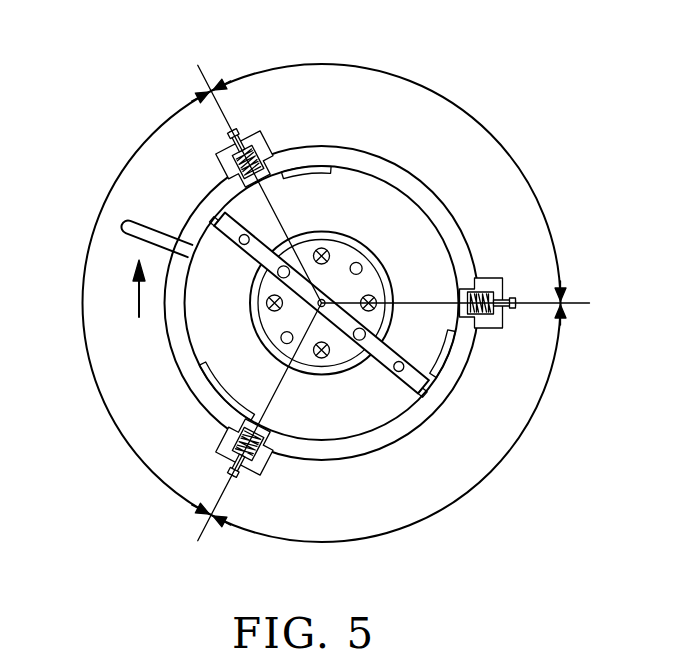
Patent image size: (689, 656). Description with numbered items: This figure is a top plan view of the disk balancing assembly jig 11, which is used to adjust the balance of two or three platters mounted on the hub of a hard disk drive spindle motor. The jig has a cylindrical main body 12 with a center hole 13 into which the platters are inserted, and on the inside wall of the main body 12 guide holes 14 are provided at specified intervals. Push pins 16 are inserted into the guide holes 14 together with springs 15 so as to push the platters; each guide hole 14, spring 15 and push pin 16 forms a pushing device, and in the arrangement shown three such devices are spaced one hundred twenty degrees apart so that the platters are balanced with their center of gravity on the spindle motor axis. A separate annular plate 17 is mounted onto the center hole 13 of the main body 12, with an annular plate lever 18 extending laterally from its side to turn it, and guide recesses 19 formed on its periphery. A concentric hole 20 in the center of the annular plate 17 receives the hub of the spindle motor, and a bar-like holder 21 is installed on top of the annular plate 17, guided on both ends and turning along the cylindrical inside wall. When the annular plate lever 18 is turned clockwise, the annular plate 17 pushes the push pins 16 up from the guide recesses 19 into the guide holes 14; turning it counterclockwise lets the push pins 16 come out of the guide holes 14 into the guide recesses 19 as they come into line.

The disk balancing assembly jig 11 is at (455, 75).
The cylindrical main body 12 is at (173, 343).
The center hole 13 is at (392, 178).
The guide holes 14 is at (228, 140).
The springs 15 is at (273, 150).
The push pins 16 is at (230, 187).
The annular plate 17 is at (207, 357).
The annular plate lever 18 is at (122, 232).
The guide recesses 19 is at (316, 172).
The concentric hole 20 is at (371, 257).
The bar-like holder 21 is at (250, 250).